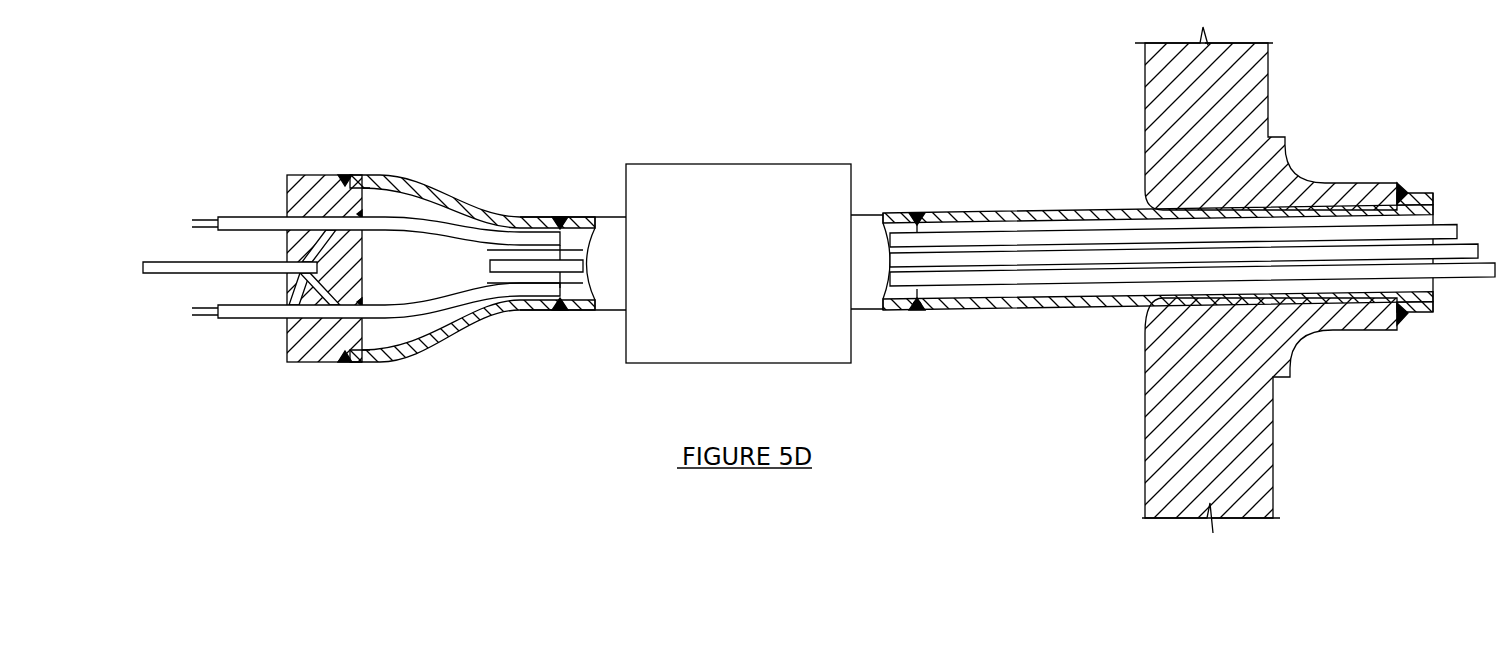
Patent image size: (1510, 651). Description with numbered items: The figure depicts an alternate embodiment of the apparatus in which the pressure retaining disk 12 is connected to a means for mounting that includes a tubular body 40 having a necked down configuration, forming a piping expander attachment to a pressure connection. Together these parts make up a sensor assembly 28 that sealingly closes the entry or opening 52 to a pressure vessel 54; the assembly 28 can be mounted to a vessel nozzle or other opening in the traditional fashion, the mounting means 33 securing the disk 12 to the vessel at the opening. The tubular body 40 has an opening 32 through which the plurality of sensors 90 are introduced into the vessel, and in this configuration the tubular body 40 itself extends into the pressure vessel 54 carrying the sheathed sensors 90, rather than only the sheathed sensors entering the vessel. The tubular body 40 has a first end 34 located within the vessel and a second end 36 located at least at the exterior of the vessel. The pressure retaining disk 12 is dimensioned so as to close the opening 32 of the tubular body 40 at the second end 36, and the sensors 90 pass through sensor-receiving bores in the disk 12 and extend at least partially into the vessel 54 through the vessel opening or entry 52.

The pressure retaining disk 12 is at (315, 175).
The sensor assembly 28 is at (731, 103).
The opening 32 is at (390, 269).
The mounting means 33 is at (610, 345).
The first end 34 is at (1433, 207).
The second end 36 is at (384, 358).
The tubular body 40 is at (458, 195).
The vessel opening 52 is at (1157, 208).
The pressure vessel 54 is at (1268, 75).
The sensors 90 is at (205, 217).